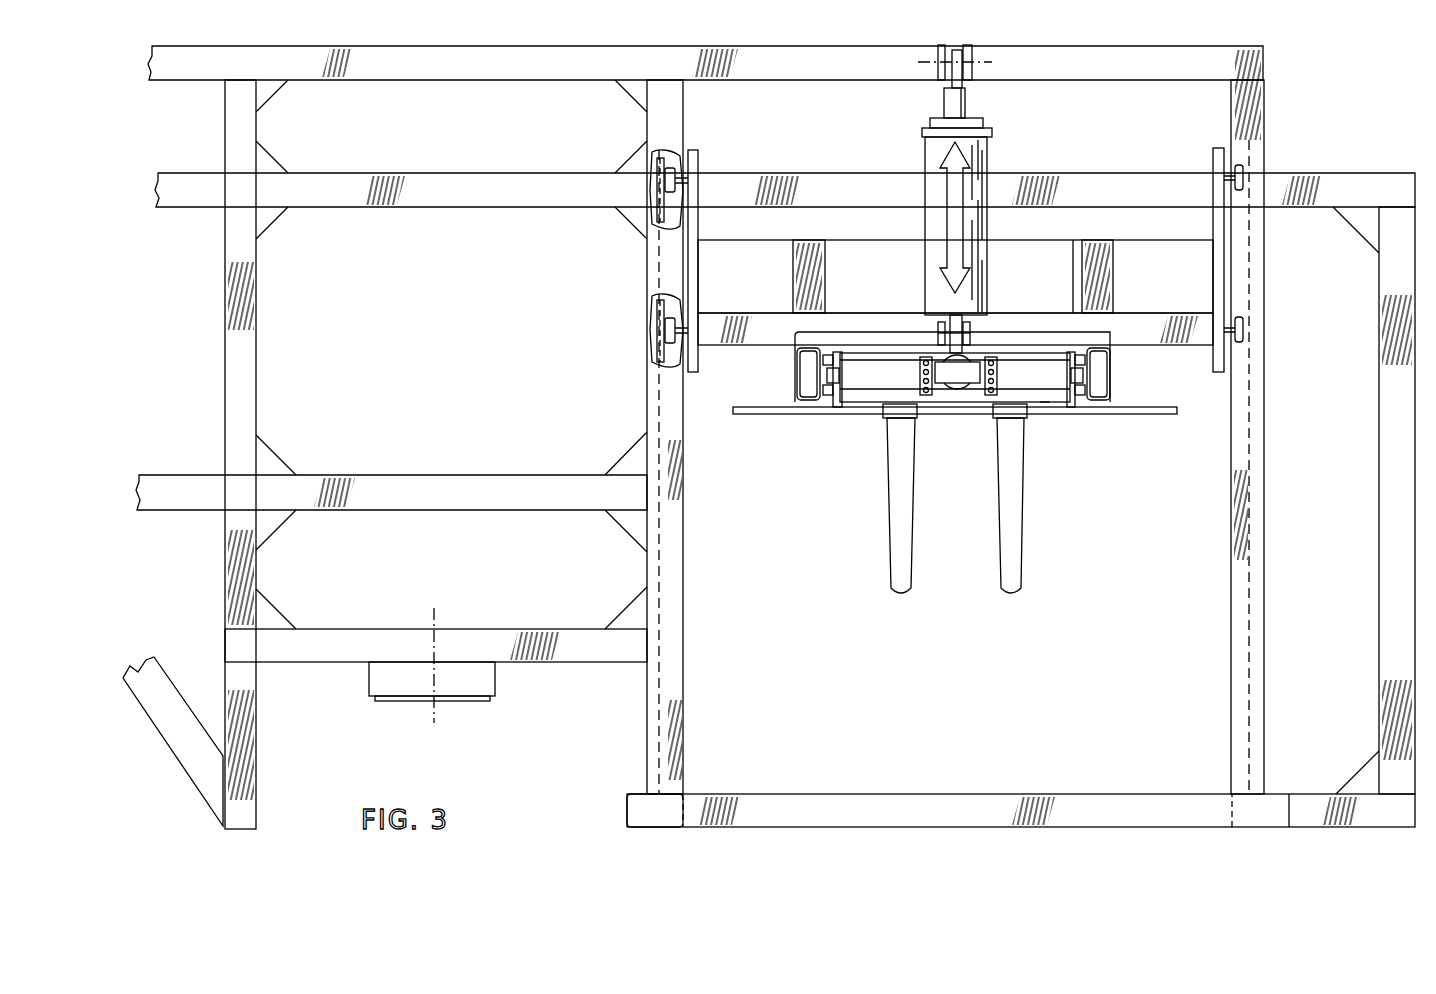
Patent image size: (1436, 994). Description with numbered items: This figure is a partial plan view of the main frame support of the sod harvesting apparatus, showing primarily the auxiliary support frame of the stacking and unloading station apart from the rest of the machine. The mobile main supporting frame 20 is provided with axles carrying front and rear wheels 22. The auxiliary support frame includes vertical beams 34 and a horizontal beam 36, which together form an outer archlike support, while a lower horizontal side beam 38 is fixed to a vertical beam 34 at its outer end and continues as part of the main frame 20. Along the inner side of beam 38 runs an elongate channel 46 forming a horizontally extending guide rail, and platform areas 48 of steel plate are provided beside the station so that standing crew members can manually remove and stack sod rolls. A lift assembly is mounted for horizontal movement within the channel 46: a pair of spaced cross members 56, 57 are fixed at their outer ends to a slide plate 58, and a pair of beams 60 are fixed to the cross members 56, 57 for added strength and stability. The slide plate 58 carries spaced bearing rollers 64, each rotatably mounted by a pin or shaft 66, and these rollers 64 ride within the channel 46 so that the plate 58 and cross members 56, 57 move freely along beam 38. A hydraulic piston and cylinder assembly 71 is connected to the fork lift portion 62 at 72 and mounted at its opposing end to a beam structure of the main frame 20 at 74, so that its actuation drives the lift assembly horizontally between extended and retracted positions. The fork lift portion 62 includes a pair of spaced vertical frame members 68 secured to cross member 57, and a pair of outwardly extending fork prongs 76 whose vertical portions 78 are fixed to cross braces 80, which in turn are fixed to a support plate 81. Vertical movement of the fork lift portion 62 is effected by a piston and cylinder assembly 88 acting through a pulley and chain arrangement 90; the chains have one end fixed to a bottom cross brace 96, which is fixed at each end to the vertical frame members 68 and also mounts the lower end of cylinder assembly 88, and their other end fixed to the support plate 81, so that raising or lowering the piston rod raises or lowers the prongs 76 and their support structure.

The mobile main supporting frame 20 is at (568, 225).
The front and rear wheels 22 is at (449, 703).
The vertical beams 34 is at (651, 829).
The horizontal beam 36 is at (1106, 828).
The horizontal side beam 38 is at (647, 748).
The elongate channel 46 is at (1249, 632).
The platform areas 48 is at (1318, 493).
The cross member 56 is at (852, 240).
The cross member 57 is at (1073, 305).
The slide plate 58 is at (697, 272).
The beams 60 is at (793, 255).
The fork lift portion 62 is at (900, 350).
The rollers 64 is at (657, 160).
The pin or shaft 66 is at (672, 330).
The vertical frame members 68 is at (795, 375).
The hydraulic piston and cylinder assembly 71 is at (987, 147).
The connection of piston and cylinder assembly 72 is at (938, 332).
The beam structure mounting 74 is at (972, 78).
The fork prongs 76 is at (888, 578).
The vertical portions 78 is at (890, 418).
The cross braces 80 is at (1135, 414).
The support plate 81 is at (1045, 407).
The piston and cylinder assembly 88 is at (960, 390).
The pulley and chain arrangement 90 is at (990, 350).
The bottom cross brace 96 is at (1035, 372).